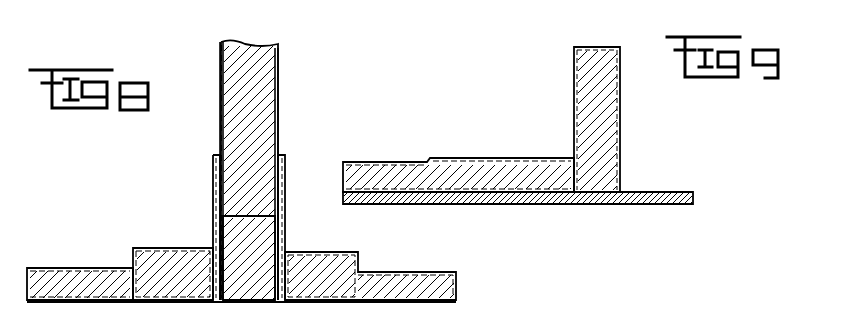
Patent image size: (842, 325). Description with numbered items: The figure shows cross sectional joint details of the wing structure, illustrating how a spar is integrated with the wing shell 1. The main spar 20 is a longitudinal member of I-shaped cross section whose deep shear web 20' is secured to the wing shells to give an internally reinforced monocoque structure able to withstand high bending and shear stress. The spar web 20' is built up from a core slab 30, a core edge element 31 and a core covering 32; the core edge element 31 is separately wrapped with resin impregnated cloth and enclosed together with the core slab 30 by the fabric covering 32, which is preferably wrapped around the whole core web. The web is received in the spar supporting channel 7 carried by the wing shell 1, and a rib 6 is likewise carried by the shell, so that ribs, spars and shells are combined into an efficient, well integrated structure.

In FIG. 8, the wing shell 1 is at (45, 270).
In FIG. 9, the wing shell 1 is at (435, 208).
In FIG. 9, the rib 6 is at (566, 93).
In FIG. 8, the spar supporting channel 7 is at (206, 191).
In FIG. 9, the main spar 20 is at (519, 212).
In FIG. 8, the spar web 20' is at (295, 174).
In FIG. 8, the core slab 30 is at (245, 43).
In FIG. 8, the core edge element 31 is at (282, 238).
In FIG. 8, the core covering 32 is at (221, 117).